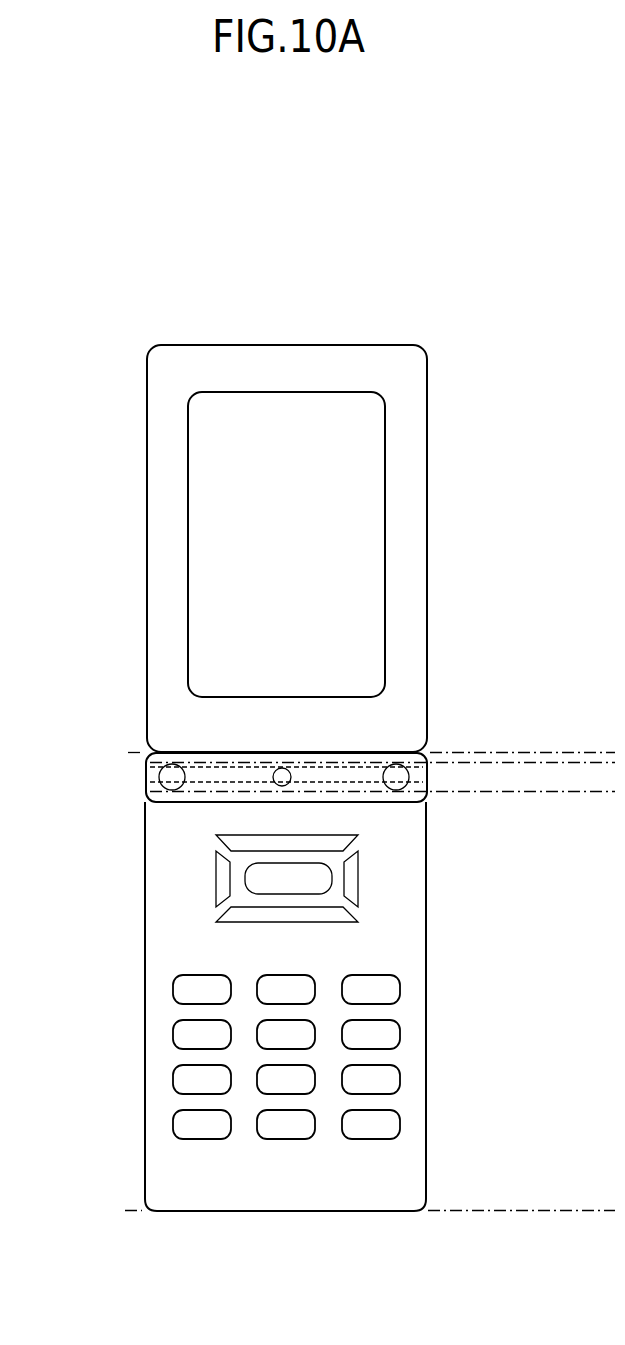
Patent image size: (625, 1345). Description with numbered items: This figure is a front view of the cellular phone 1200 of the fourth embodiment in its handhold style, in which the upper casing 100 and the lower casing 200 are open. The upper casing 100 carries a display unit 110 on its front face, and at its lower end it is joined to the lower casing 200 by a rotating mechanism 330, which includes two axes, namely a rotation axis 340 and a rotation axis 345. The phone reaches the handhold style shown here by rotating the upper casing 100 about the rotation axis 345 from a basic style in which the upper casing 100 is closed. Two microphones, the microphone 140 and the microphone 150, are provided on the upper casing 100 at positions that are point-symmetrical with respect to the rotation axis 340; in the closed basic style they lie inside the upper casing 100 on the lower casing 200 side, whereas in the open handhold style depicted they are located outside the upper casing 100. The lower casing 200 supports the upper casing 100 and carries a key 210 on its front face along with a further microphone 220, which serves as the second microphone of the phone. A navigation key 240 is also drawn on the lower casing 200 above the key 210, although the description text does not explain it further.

The cellular phone 1200 is at (284, 220).
The upper casing 100 is at (330, 365).
The display unit 110 is at (342, 455).
The microphone 140 is at (143, 800).
The microphone 150 is at (397, 777).
The lower casing 200 is at (283, 1182).
The key 210 is at (180, 957).
The microphone 220 is at (170, 781).
The navigation key 240 is at (210, 833).
The rotating mechanism 330 is at (349, 727).
The rotation axis 340 is at (289, 774).
The rotation axis 345 is at (391, 755).